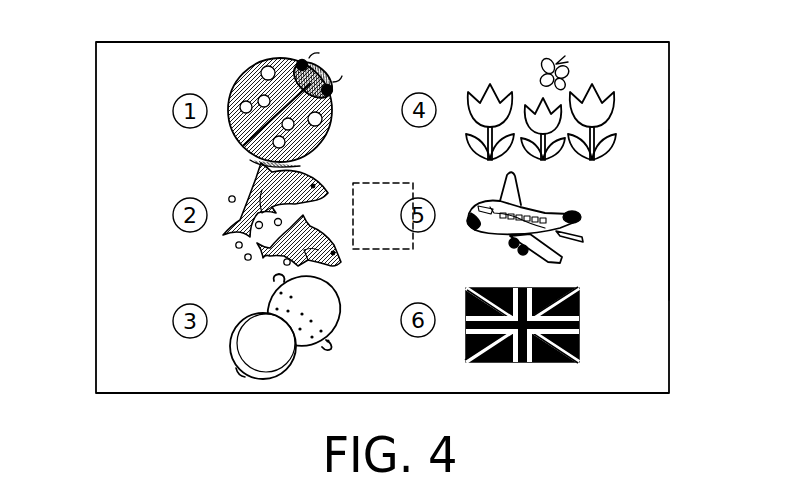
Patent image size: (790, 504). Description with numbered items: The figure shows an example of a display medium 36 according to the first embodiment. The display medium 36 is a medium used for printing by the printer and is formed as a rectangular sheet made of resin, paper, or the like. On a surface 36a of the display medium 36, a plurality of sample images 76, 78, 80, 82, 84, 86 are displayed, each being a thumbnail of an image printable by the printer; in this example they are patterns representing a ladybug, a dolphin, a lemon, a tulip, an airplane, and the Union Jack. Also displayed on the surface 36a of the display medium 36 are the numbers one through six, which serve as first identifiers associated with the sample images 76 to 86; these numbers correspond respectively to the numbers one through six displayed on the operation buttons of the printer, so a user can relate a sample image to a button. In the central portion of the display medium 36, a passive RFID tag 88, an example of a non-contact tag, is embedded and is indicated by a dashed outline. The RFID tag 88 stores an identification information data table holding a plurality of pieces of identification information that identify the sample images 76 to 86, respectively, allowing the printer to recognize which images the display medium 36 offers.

The display medium 36 is at (637, 42).
The surface of the display medium 36a is at (653, 229).
The sample image 76 is at (237, 82).
The sample image 78 is at (245, 168).
The sample image 80 is at (268, 290).
The sample image 82 is at (617, 104).
The sample image 84 is at (580, 214).
The sample image 86 is at (580, 323).
The passive RFID tag 88 is at (373, 183).